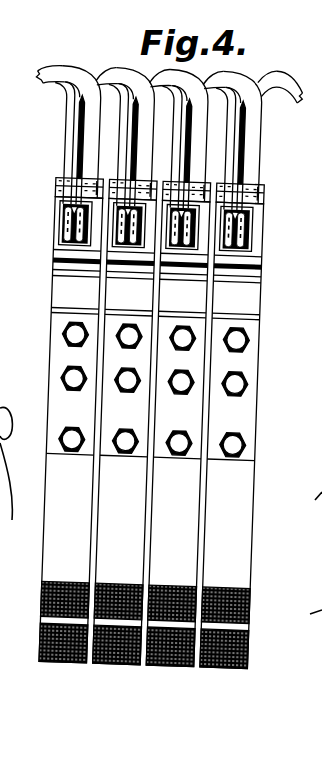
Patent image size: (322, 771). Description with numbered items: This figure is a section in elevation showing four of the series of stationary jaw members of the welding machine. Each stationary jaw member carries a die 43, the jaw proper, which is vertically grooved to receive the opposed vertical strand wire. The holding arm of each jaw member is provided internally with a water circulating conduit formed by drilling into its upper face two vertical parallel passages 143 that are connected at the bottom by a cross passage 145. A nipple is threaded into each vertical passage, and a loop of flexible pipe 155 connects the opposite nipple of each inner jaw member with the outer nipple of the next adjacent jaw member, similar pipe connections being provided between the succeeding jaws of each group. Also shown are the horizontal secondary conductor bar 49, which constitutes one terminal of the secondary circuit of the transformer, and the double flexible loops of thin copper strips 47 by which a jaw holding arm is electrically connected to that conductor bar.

The loop of flexible pipe 155 is at (70, 118).
The vertical parallel passages 143 is at (57, 184).
The die 43 is at (64, 217).
The cross passage 145 is at (66, 237).
The horizontal secondary conductor bar 49 is at (62, 289).
The flexible loops of thin copper strips 47 is at (238, 645).